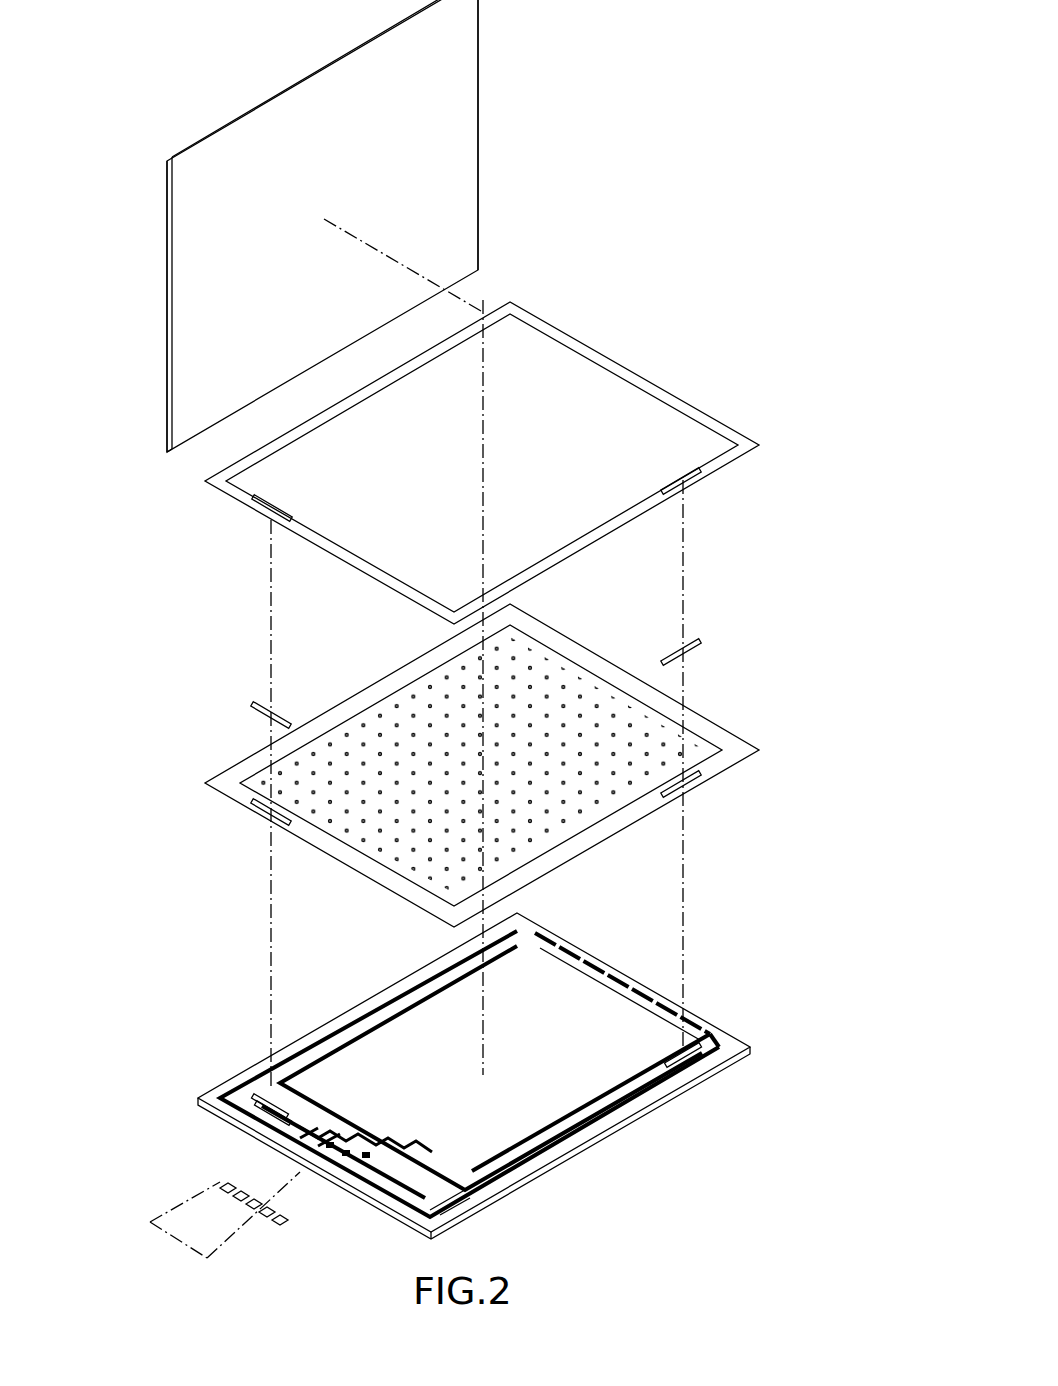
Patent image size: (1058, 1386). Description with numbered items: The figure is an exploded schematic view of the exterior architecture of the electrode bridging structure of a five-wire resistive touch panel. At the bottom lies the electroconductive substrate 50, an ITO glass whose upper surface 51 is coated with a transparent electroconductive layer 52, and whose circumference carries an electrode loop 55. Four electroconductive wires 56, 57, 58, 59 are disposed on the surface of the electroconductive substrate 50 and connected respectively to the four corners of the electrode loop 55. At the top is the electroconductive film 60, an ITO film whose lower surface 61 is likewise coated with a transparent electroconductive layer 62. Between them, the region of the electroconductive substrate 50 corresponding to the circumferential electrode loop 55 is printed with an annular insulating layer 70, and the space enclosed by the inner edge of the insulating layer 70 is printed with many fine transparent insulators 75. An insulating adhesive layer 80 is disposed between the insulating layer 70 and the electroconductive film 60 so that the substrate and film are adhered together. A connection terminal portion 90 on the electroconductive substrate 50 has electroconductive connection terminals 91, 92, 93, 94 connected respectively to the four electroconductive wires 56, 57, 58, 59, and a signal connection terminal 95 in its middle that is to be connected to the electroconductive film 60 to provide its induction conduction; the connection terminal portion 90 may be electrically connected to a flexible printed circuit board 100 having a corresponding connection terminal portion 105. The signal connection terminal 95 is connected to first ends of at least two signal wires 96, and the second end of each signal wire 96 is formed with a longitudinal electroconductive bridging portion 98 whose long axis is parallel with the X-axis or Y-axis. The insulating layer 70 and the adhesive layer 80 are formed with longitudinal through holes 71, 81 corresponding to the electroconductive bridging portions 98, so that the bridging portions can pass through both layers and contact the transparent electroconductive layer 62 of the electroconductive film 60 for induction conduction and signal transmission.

The electroconductive substrate 50 is at (422, 1238).
The upper surface 51 is at (634, 1032).
The transparent electroconductive layer 52 is at (575, 950).
The electrode loop 55 is at (377, 1032).
The electroconductive wire 56 is at (397, 992).
The electroconductive wire 57 is at (278, 1092).
The electroconductive wire 58 is at (638, 1095).
The electroconductive wire 59 is at (482, 1200).
The electroconductive film 60 is at (320, 78).
The lower surface 61 is at (215, 250).
The transparent electroconductive layer 62 is at (458, 128).
The insulating layer 70 is at (740, 758).
The through hole 71 is at (705, 784).
The transparent insulator 75 is at (582, 648).
The adhesive layer 80 is at (735, 458).
The through hole 81 is at (698, 488).
The connection terminal portion 90 is at (284, 1123).
The electroconductive connection terminal 91 is at (320, 1146).
The electroconductive connection terminal 92 is at (298, 1141).
The electroconductive connection terminal 93 is at (368, 1160).
The electroconductive connection terminal 94 is at (348, 1158).
The signal connection terminal 95 is at (332, 1150).
The signal wire 96 is at (275, 1098).
The electroconductive bridging portion 98 is at (705, 644).
The flexible printed circuit board 100 is at (190, 1200).
The connection terminal portion 105 is at (215, 1184).